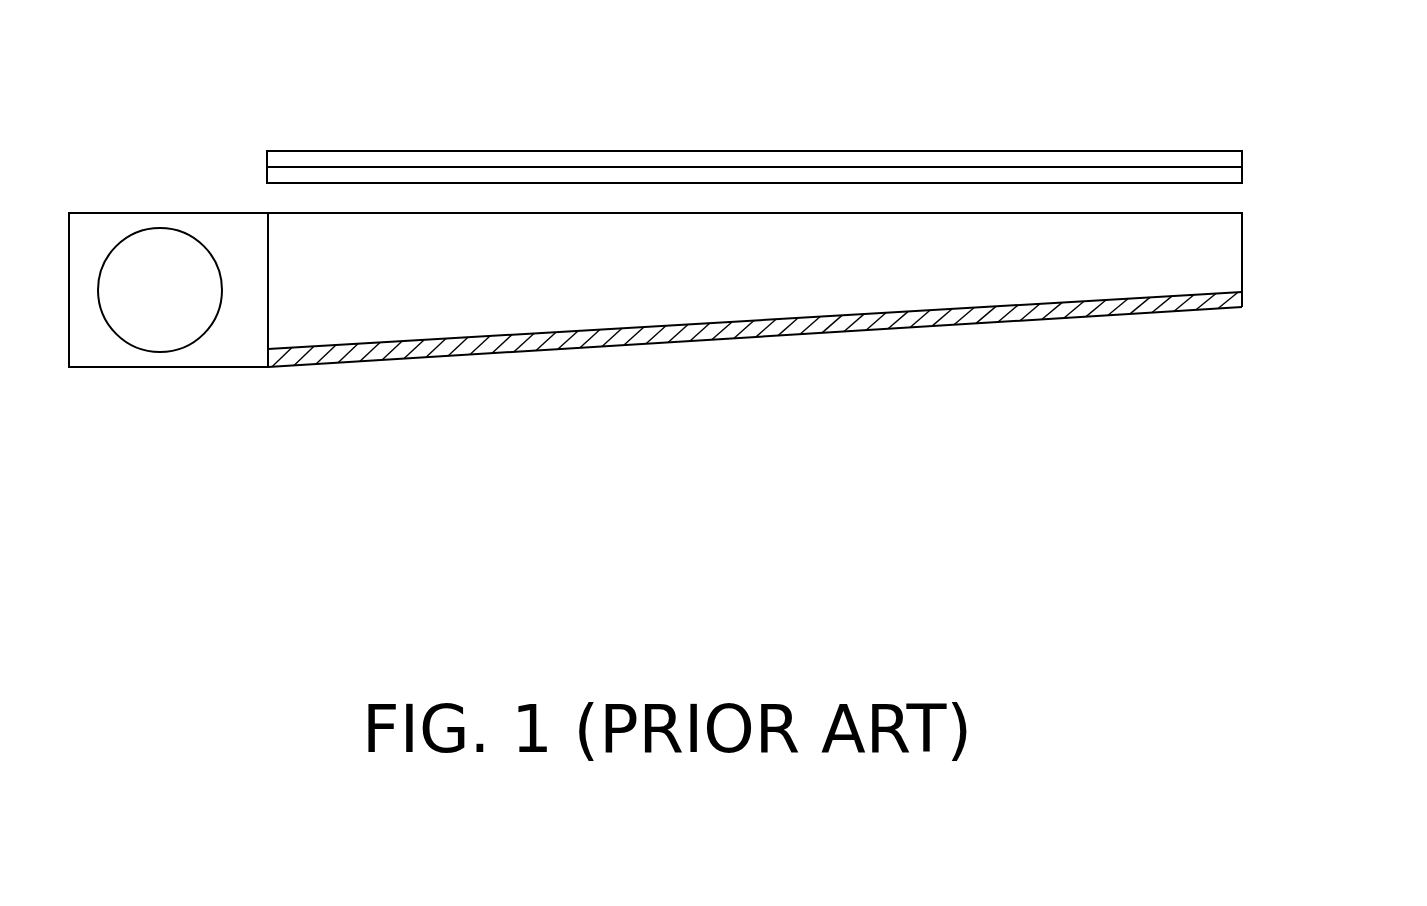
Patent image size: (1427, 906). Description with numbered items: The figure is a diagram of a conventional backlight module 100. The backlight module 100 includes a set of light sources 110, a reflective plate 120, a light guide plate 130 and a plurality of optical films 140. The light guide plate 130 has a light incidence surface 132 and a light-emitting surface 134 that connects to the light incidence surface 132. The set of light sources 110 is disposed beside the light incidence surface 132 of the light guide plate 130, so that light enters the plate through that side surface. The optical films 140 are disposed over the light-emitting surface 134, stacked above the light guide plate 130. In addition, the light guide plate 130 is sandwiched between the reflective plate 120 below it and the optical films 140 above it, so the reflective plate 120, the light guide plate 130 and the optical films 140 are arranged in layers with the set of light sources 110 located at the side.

The backlight module 100 is at (1292, 560).
The set of light sources 110 is at (150, 310).
The reflective plate 120 is at (675, 344).
The light guide plate 130 is at (820, 273).
The light incidence surface 132 is at (268, 290).
The light-emitting surface 134 is at (1192, 213).
The optical films 140 is at (1252, 183).